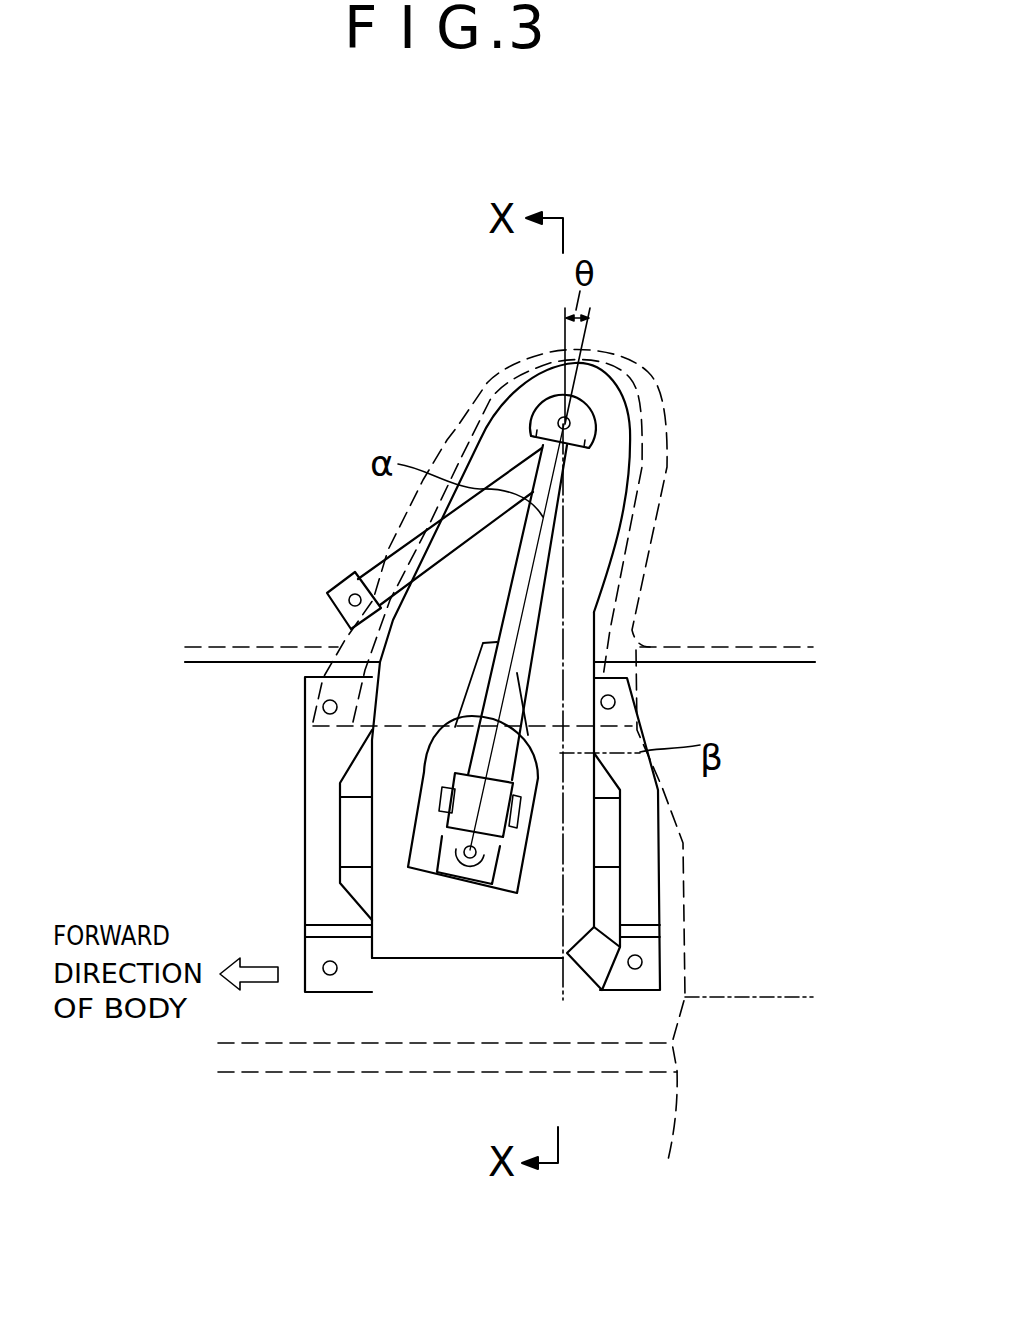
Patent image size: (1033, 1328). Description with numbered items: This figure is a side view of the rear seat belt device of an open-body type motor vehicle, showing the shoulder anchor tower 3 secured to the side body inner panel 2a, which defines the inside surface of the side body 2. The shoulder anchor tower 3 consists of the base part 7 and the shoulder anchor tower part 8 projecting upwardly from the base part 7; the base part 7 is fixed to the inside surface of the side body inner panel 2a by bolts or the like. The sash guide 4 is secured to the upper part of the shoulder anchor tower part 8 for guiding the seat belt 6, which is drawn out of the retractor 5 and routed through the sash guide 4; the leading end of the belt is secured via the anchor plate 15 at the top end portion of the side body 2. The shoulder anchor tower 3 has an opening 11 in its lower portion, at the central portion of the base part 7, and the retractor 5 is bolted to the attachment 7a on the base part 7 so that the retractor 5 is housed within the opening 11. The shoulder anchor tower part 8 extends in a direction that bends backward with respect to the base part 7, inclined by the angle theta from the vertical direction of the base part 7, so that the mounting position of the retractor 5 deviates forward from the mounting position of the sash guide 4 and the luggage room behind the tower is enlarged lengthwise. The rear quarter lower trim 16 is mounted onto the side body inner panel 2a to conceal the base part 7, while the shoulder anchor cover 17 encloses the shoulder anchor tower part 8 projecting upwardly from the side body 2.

The side body 2 is at (739, 658).
The side body inner panel 2a is at (783, 714).
The shoulder anchor tower 3 is at (606, 605).
The sash guide 4 is at (582, 418).
The retractor 5 is at (460, 801).
The seat belt 6 is at (527, 568).
The base part 7 is at (570, 880).
The attachment 7a is at (435, 867).
The shoulder anchor tower part 8 is at (606, 493).
The opening 11 is at (498, 893).
The anchor plate 15 is at (335, 592).
The rear quarter lower trim 16 is at (232, 645).
The shoulder anchor cover 17 is at (677, 432).